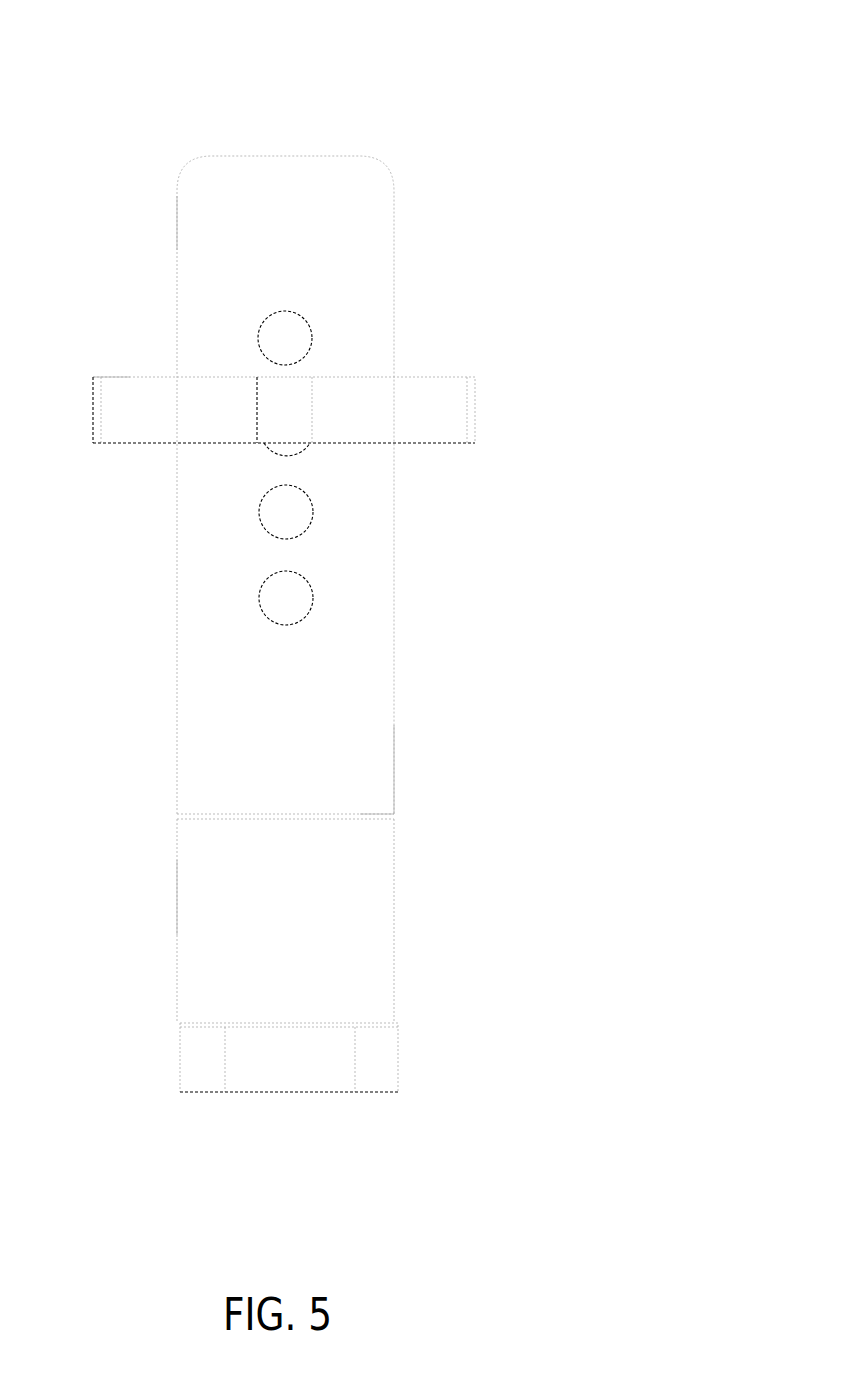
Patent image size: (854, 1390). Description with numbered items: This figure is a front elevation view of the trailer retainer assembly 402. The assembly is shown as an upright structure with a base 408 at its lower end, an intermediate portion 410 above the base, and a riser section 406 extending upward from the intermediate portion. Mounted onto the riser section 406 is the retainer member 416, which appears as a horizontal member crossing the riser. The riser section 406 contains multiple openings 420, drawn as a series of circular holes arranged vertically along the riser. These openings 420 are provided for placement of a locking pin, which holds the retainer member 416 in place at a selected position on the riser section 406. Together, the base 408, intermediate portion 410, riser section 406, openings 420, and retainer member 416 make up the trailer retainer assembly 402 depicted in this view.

The trailer retainer assembly 402 is at (376, 120).
The riser section 406 is at (357, 272).
The base 408 is at (380, 1067).
The intermediate portion 410 is at (360, 922).
The retainer member 416 is at (447, 425).
The openings 420 is at (285, 340).